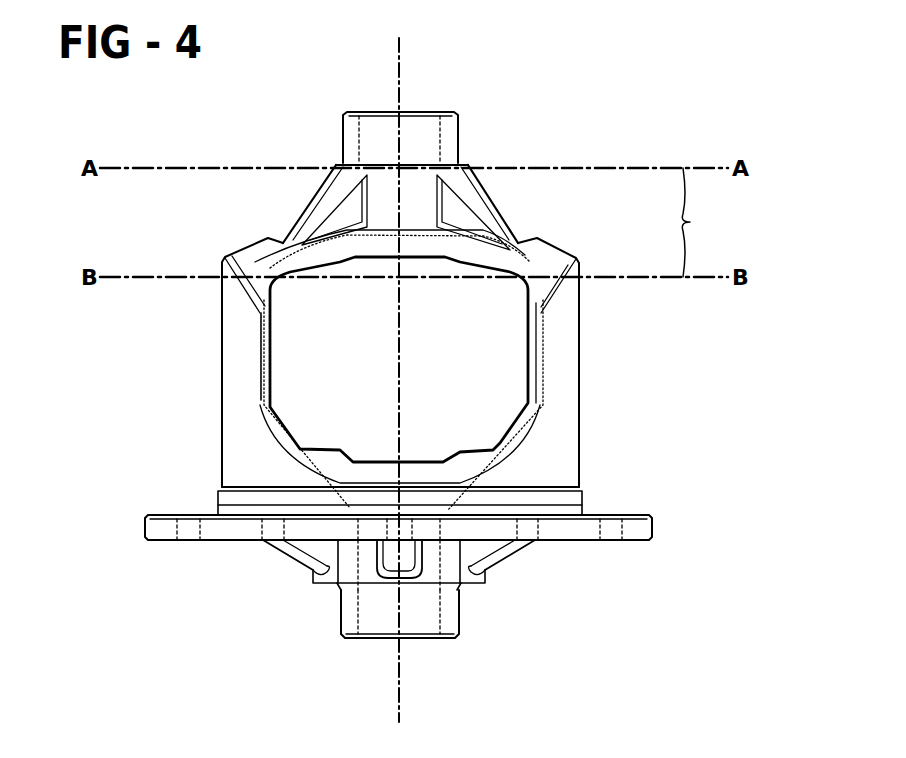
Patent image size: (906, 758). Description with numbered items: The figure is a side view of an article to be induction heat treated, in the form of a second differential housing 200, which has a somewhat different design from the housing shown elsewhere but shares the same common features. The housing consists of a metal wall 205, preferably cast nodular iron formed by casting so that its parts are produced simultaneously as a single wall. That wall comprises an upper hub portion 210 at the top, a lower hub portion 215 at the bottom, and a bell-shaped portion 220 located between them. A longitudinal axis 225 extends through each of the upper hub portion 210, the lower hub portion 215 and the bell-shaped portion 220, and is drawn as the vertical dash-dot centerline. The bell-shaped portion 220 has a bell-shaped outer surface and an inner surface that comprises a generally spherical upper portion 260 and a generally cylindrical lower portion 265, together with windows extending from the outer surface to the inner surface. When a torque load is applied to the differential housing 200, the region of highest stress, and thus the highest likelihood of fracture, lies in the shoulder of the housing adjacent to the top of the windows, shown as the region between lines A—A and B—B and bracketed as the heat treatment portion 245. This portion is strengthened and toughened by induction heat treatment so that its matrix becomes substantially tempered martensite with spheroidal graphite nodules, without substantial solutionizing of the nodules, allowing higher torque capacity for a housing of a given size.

The differential housing 200 is at (462, 116).
The metal wall 205 is at (470, 250).
The upper hub portion 210 is at (447, 137).
The lower hub portion 215 is at (448, 605).
The bell-shaped portion 220 is at (560, 380).
The longitudinal axis 225 is at (402, 672).
The heat treatment portion 245 is at (690, 222).
The generally spherical upper portion 260 is at (275, 268).
The generally cylindrical lower portion 265 is at (257, 375).